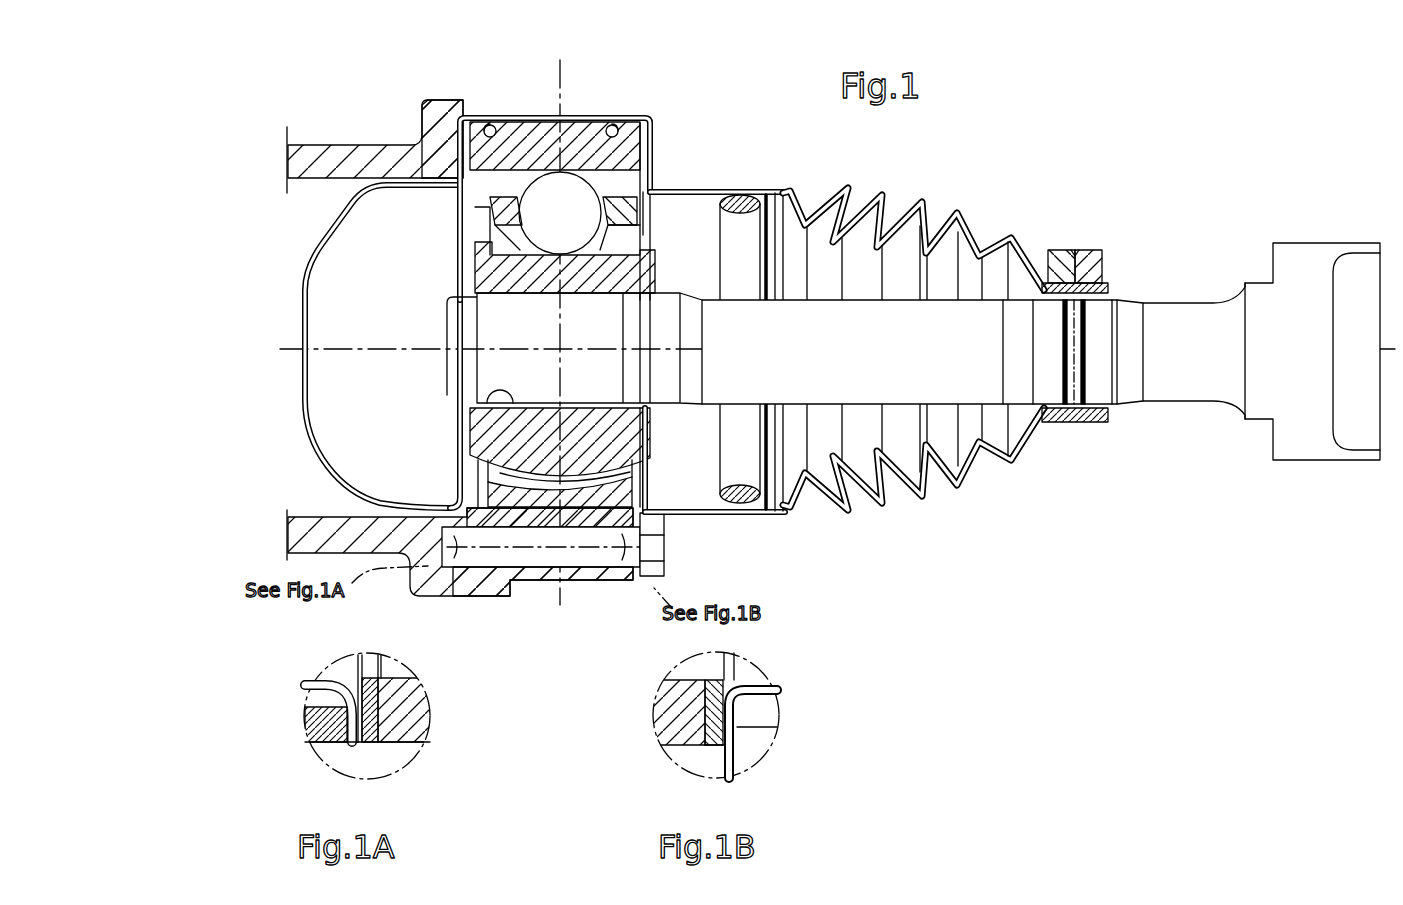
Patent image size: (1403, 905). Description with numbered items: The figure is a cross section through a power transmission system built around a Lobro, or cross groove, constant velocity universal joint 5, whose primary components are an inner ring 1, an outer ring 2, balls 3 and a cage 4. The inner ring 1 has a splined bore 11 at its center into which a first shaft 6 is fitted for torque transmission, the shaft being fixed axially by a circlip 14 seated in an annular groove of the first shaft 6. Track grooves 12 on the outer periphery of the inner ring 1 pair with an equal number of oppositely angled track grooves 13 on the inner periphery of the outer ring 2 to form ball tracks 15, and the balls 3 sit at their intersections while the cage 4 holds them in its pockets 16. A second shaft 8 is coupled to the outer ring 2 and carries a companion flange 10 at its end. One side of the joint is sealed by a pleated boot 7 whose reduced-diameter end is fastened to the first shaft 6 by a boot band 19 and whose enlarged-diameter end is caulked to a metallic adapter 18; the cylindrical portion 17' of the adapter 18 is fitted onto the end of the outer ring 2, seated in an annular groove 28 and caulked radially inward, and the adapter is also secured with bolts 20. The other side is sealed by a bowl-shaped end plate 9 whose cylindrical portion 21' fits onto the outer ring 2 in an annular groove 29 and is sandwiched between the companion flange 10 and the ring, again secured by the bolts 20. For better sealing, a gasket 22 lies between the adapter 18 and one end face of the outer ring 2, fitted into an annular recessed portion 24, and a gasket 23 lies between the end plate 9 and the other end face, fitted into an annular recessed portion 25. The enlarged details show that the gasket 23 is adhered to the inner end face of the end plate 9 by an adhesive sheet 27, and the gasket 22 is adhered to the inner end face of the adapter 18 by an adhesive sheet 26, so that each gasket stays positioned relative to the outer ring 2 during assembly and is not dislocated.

In FIG. 1, the inner ring 1 is at (642, 434).
In FIG. 1, the outer ring 2 is at (560, 118).
In FIG. 1A, the outer ring 2 is at (430, 716).
In FIG. 1B, the outer ring 2 is at (658, 720).
In FIG. 1, the balls 3 is at (575, 186).
In FIG. 1, the cage 4 is at (585, 580).
In FIG. 1, the constant velocity universal joint 5 is at (557, 592).
In FIG. 1, the first shaft 6 is at (1183, 307).
In FIG. 1, the boot 7 is at (920, 202).
In FIG. 1, the second shaft 8 is at (289, 165).
In FIG. 1, the end plate 9 is at (310, 322).
In FIG. 1A, the end plate 9 is at (307, 706).
In FIG. 1, the companion flange 10 is at (302, 142).
In FIG. 1A, the companion flange 10 is at (306, 722).
In FIG. 1, the splined bore 11 is at (470, 386).
In FIG. 1, the track grooves 12 is at (488, 243).
In FIG. 1, the track grooves 13 is at (656, 188).
In FIG. 1, the circlip 14 is at (448, 298).
In FIG. 1, the ball tracks 15 is at (646, 193).
In FIG. 1, the pockets 16 is at (543, 190).
In FIG. 1, the cylindrical portion 17' is at (652, 93).
In FIG. 1, the adapter 18 is at (750, 514).
In FIG. 1B, the adapter 18 is at (776, 720).
In FIG. 1, the boot band 19 is at (1070, 424).
In FIG. 1, the bolts 20 is at (526, 556).
In FIG. 1, the cylindrical portion 21' is at (466, 88).
In FIG. 1, the gasket 22 is at (652, 512).
In FIG. 1B, the gasket 22 is at (707, 760).
In FIG. 1, the gasket 23 is at (468, 454).
In FIG. 1A, the gasket 23 is at (372, 746).
In FIG. 1, the annular recessed portion 24 is at (658, 170).
In FIG. 1B, the annular recessed portion 24 is at (680, 740).
In FIG. 1, the annular recessed portion 25 is at (430, 110).
In FIG. 1A, the annular recessed portion 25 is at (424, 710).
In FIG. 1, the adhesive sheet 26 is at (650, 485).
In FIG. 1B, the adhesive sheet 26 is at (745, 758).
In FIG. 1, the adhesive sheet 27 is at (458, 424).
In FIG. 1A, the adhesive sheet 27 is at (345, 737).
In FIG. 1, the annular groove 28 is at (600, 120).
In FIG. 1, the annular groove 29 is at (494, 117).